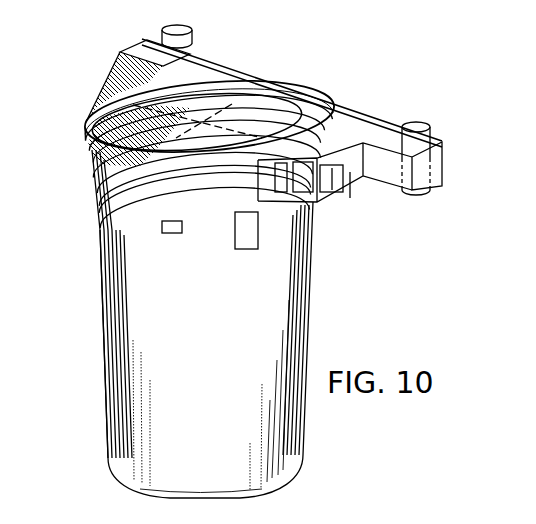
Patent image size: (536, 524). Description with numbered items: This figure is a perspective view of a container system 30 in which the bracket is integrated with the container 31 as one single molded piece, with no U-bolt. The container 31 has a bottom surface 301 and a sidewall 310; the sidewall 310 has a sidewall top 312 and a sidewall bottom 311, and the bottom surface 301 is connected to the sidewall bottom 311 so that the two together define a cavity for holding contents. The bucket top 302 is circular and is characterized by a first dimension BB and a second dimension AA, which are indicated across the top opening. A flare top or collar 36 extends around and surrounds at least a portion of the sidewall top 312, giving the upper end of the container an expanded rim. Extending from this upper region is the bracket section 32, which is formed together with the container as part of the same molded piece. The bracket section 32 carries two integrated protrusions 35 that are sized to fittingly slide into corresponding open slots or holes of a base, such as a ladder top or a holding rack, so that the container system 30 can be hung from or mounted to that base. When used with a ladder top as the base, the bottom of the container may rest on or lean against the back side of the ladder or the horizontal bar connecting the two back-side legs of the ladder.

The container system 30 is at (84, 337).
The container 31 is at (273, 341).
The bottom surface 301 is at (120, 473).
The bucket top 302 is at (117, 143).
The sidewall 310 is at (203, 359).
The sidewall bottom 311 is at (276, 442).
The sidewall top 312 is at (117, 178).
The bracket section 32 is at (370, 168).
The integrated protrusions 35 is at (423, 200).
The flare top or collar 36 is at (333, 174).
The second dimension AA is at (256, 102).
The first dimension BB is at (150, 110).